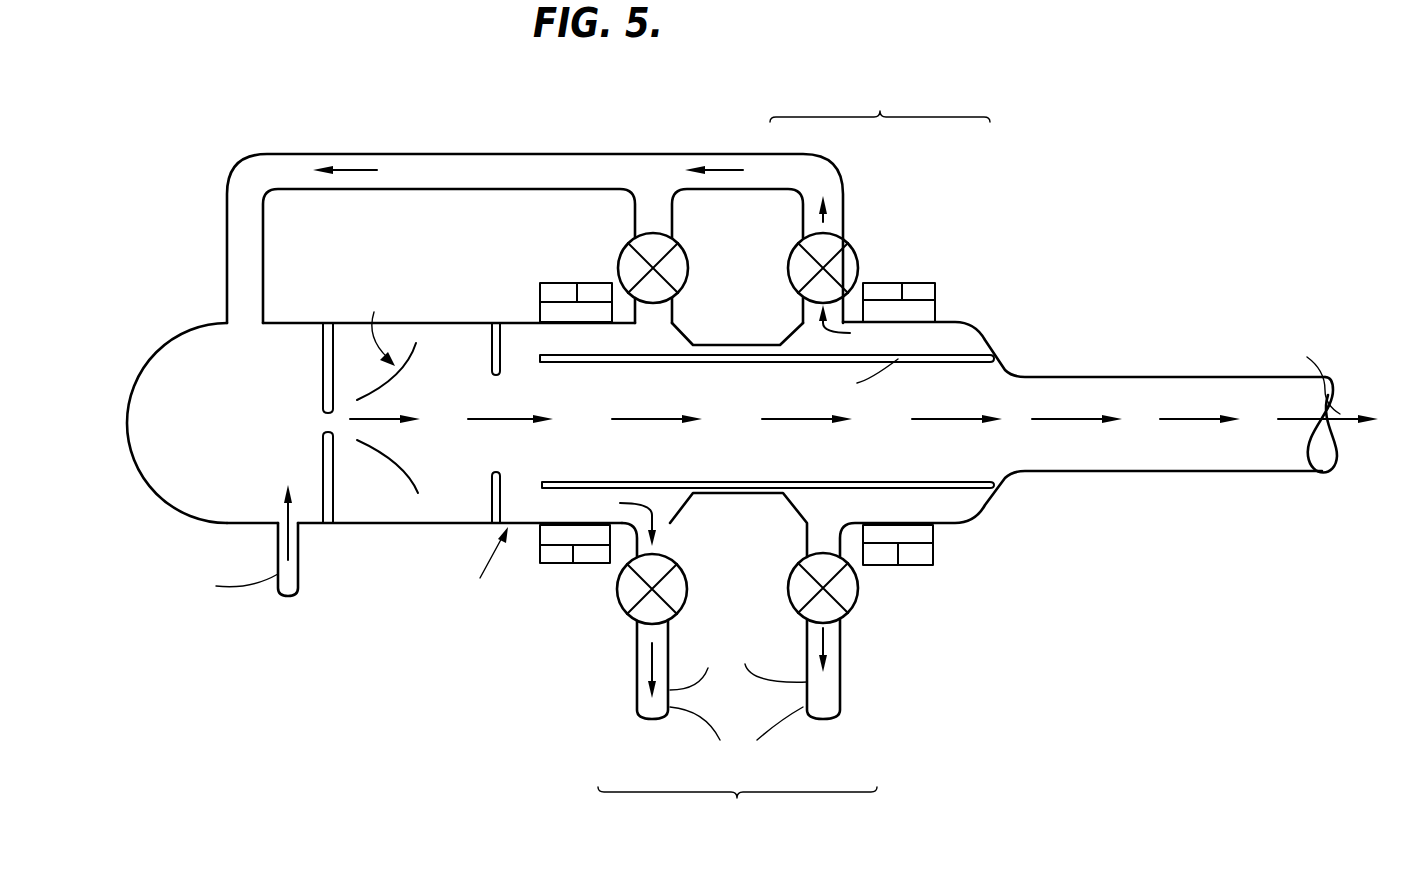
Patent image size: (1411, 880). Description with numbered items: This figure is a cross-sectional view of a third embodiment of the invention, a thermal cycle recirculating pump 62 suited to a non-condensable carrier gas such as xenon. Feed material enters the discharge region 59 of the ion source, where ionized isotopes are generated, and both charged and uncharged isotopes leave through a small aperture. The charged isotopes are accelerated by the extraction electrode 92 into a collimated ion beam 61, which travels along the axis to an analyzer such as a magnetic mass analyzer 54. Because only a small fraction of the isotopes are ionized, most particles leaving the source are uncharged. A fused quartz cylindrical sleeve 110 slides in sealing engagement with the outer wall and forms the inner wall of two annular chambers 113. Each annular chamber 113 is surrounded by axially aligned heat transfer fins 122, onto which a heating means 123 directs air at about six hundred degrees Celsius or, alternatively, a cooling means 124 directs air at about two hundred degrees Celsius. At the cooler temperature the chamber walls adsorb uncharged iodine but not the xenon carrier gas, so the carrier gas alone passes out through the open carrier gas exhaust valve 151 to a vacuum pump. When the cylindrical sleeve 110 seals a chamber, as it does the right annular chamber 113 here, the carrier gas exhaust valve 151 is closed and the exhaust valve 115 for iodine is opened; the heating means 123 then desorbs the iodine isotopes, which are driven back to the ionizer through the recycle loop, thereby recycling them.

The magnetic mass analyzer 54 is at (1391, 456).
The discharge region 59 is at (267, 454).
The collimated ion beam 61 is at (1062, 420).
The thermal cycle recirculating pump 62 is at (640, 155).
The extraction electrode 92 is at (414, 366).
The cylindrical sleeve 110 is at (925, 359).
The annular chamber 113 is at (643, 335).
The exhaust valve for iodine 115 is at (681, 272).
The heat transfer fins 122 is at (573, 313).
The heating means 123 is at (561, 293).
The cooling means 124 is at (596, 293).
The carrier gas exhaust valve 151 is at (686, 578).